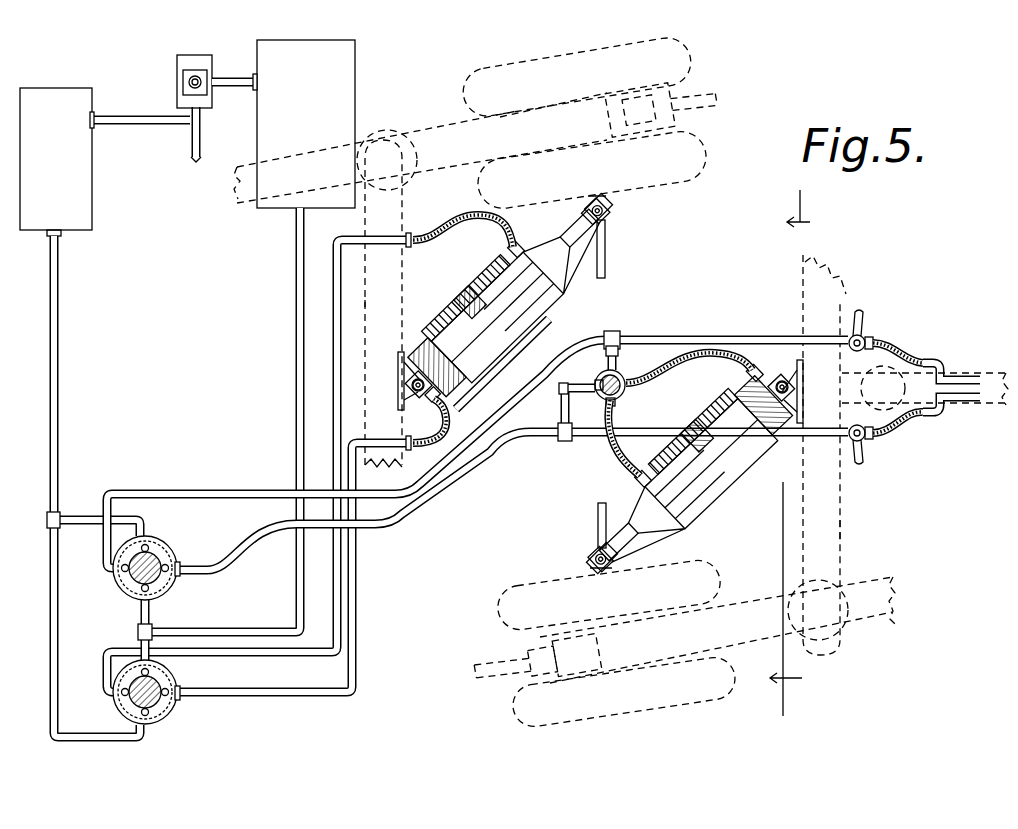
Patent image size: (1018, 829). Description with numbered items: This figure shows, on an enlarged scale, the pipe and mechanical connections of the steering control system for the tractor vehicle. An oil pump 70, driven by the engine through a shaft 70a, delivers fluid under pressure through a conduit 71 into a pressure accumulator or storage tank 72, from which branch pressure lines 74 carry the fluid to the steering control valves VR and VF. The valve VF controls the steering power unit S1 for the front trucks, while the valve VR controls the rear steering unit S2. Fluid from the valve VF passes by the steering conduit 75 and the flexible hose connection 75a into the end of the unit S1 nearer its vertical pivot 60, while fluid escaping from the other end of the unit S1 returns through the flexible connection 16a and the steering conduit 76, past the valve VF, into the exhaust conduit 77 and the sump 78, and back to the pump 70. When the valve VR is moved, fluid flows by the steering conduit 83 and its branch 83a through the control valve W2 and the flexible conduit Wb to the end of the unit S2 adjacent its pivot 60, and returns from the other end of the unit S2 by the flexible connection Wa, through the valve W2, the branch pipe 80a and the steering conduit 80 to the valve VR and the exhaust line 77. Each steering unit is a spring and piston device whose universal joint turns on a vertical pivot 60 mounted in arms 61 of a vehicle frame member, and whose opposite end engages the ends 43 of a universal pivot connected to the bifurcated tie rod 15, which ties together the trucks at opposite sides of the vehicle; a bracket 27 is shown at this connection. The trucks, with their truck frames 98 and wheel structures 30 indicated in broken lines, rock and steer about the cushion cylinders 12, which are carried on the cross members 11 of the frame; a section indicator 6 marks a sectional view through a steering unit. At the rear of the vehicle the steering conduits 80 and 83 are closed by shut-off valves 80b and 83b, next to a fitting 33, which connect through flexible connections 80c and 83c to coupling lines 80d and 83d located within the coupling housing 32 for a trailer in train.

The pressure accumulator or storage tank 72 is at (20, 119).
The oil pump 70 is at (197, 62).
The shaft 70a is at (191, 144).
The conduit 71 is at (137, 117).
The sump 78 is at (298, 45).
The cushion cylinders 12 is at (370, 128).
The truck frame 98 is at (436, 140).
The cross members 11 is at (398, 298).
The wheel and axle unit 30 is at (700, 110).
The section line 6 is at (796, 457).
The steering conduit 75 is at (60, 346).
The steering conduit 76 is at (347, 332).
The exhaust conduit 77 is at (140, 598).
The branch pressure lines 74 is at (78, 508).
The steering conduit 83 is at (208, 490).
The steering conduit 80 is at (264, 526).
The branch pipe 80a is at (562, 398).
The branch pipe 83a is at (606, 352).
The steering control valve VR is at (162, 545).
The steering control valve VF is at (166, 708).
The steering power unit S1 is at (507, 297).
The rear steering unit S2 is at (691, 472).
The vertical pivot 60 is at (421, 404).
The arms 61 is at (398, 398).
The ends of universal pivot 43 is at (608, 213).
The tie rod 15 is at (608, 248).
The mounting bracket 27 is at (600, 200).
The flexible hose connection 75a is at (460, 410).
The flexible hose 16a is at (446, 232).
The control valve W2 is at (624, 380).
The flexible conduit Wb is at (680, 376).
The flexible connection Wa is at (624, 464).
The shut-off valve 83b is at (862, 334).
The nut 33 is at (870, 376).
The flexible connection 83c is at (905, 348).
The coupling line 83d is at (955, 372).
The shut-off valve 80b is at (864, 445).
The flexible connection 80c is at (908, 424).
The coupling line 80d is at (972, 404).
The coupling housing 32 is at (984, 374).